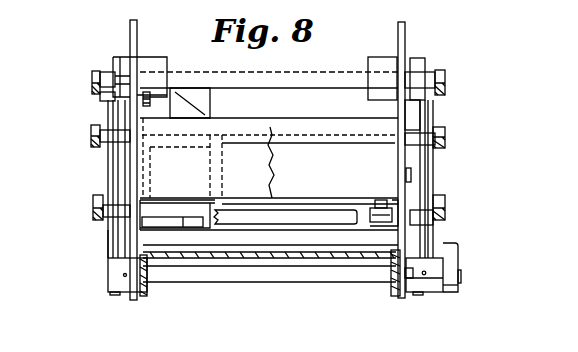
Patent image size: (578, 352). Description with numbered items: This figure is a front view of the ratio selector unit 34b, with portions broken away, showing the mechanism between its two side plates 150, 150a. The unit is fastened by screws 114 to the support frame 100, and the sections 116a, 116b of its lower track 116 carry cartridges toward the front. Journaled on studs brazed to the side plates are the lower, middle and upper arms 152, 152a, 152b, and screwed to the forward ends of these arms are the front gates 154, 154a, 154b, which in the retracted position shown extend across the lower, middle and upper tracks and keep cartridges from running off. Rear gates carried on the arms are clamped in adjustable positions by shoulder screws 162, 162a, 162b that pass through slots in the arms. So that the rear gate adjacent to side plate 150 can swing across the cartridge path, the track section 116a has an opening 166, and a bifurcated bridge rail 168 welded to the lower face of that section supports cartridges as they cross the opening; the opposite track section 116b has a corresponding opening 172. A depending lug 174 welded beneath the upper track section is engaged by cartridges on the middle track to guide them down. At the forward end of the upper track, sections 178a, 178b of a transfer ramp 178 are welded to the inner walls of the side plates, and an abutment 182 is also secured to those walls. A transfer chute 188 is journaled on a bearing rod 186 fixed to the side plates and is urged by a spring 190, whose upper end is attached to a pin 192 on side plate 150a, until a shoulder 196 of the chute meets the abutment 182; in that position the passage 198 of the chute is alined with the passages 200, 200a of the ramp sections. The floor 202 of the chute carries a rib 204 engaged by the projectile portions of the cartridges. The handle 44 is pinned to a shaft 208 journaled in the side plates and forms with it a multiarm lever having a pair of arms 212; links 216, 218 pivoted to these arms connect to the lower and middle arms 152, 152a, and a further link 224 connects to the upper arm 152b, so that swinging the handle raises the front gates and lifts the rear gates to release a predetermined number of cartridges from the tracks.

The ratio selector unit 34b is at (457, 166).
The handle 44 is at (458, 252).
The support frame 100 is at (410, 260).
The screws 114 is at (418, 275).
The lower track 116 is at (218, 232).
The section of lower track 116a is at (382, 222).
The section of lower track 116b is at (212, 232).
The side plate 150 is at (404, 27).
The side plate 150a is at (130, 27).
The lower arm 152 is at (118, 231).
The middle arm 152a is at (110, 155).
The upper arm 152b is at (92, 82).
The lower front gate 154 is at (275, 221).
The middle front gate 154a is at (428, 130).
The upper front gate 154b is at (411, 58).
The shoulder screw 162 is at (93, 207).
The shoulder screw 162a is at (91, 141).
The shoulder screw 162b is at (443, 72).
The opening 166 is at (395, 205).
The bifurcated bridge rail 168 is at (365, 232).
The opening 172 is at (168, 218).
The depending lug 174 is at (210, 101).
The transfer ramp 178 is at (378, 108).
The section of transfer ramp 178a is at (368, 120).
The section of transfer ramp 178b is at (181, 102).
The abutment 182 is at (219, 160).
The bearing rod 186 is at (412, 176).
The transfer chute 188 is at (323, 128).
The spring 190 is at (147, 103).
The pin 192 is at (148, 96).
The shoulder 196 is at (225, 117).
The passage 198 is at (315, 148).
The passage 200 is at (157, 102).
The passage 200a is at (383, 101).
The floor 202 is at (333, 176).
The rib 204 is at (222, 162).
The shaft 208 is at (462, 277).
The arms 212 is at (115, 253).
The link 216 is at (108, 242).
The link 218 is at (120, 172).
The link 224 is at (426, 108).